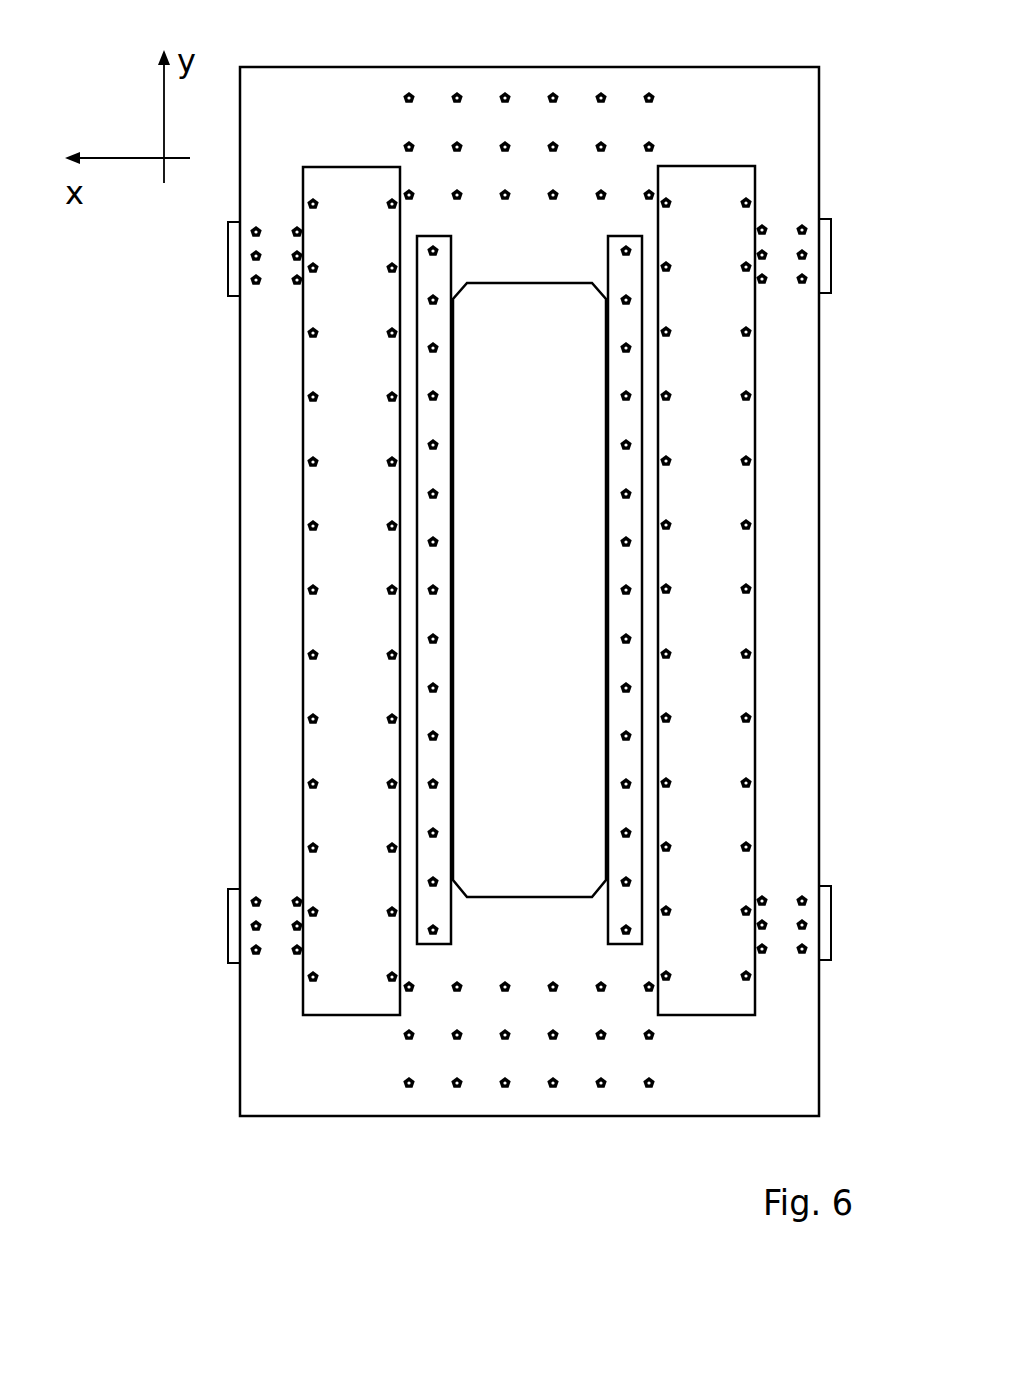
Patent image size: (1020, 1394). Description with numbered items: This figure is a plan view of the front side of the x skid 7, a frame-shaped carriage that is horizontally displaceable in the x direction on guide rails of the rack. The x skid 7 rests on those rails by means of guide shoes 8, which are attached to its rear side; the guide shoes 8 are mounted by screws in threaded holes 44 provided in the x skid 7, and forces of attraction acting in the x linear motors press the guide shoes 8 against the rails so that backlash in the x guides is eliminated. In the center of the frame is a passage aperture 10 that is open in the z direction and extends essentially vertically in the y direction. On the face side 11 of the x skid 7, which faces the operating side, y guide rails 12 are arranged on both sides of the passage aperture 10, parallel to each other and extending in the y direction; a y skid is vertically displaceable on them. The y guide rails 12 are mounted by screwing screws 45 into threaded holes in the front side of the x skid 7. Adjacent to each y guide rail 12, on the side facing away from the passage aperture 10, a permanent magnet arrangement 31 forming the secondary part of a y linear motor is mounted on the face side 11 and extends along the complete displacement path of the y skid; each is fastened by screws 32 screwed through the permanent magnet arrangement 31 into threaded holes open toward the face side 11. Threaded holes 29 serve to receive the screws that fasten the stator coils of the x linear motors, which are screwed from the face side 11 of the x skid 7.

The x skid 7 is at (828, 537).
The guide shoes 8 is at (820, 243).
The passage aperture 10 is at (556, 578).
The face side 11 is at (723, 133).
The y guide rails 12 is at (437, 666).
The threaded holes 29 is at (650, 95).
The permanent magnet arrangements 31 is at (363, 554).
The screws 32 is at (310, 398).
The threaded holes 44 is at (806, 228).
The screws 45 is at (622, 399).